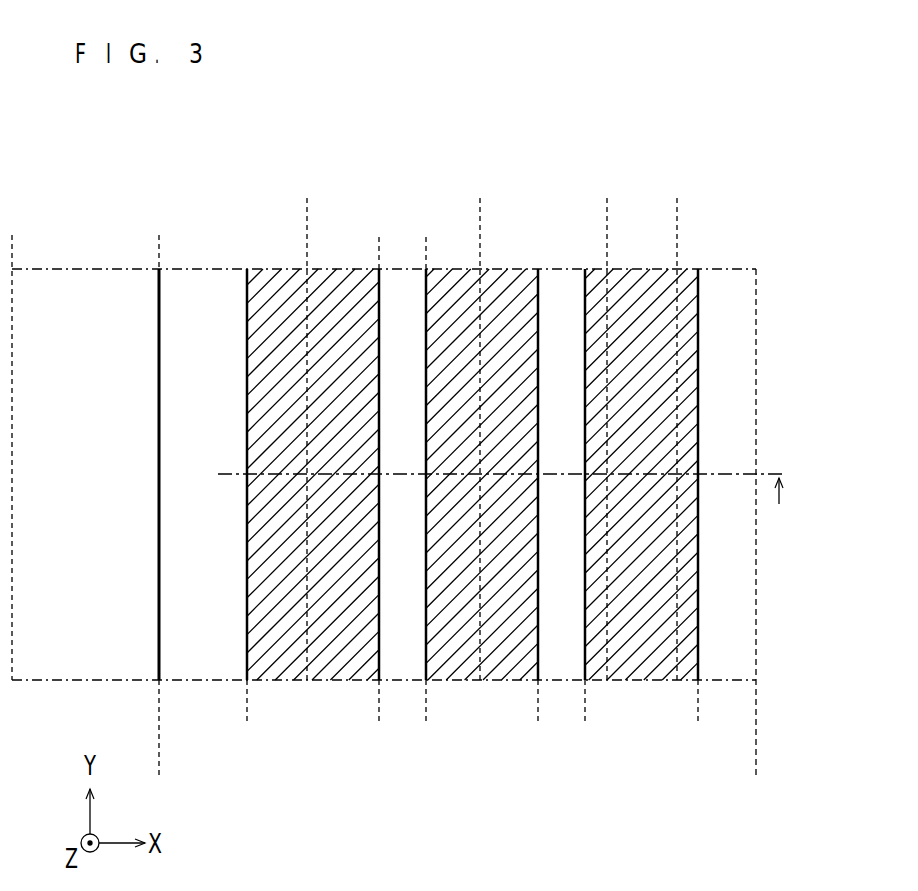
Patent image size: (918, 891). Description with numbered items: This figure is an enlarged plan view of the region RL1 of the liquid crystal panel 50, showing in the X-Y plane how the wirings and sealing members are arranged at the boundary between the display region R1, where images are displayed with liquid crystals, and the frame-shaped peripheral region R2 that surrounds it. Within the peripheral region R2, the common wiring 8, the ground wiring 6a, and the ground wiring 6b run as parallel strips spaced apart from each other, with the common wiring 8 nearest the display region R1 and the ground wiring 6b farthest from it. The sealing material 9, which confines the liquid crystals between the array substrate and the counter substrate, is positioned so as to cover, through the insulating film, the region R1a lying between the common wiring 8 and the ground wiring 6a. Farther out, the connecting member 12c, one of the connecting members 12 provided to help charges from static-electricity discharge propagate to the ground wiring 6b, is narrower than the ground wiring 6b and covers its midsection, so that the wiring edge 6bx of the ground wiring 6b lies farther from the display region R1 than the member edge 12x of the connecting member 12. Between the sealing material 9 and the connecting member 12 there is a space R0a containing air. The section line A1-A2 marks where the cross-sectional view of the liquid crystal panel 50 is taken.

The liquid crystal panel 50 is at (746, 203).
The display region R1 is at (160, 242).
The region between the common wiring and the ground wiring R1a is at (426, 244).
The space R0a is at (607, 205).
The peripheral region R2 is at (756, 770).
The region RL1 is at (756, 268).
The sealing material 9 is at (480, 205).
The common wiring 8 is at (379, 718).
The ground wiring 6a is at (538, 718).
The ground wiring 6b is at (698, 718).
The wiring edge 6bx is at (700, 440).
The connecting member 12c is at (657, 422).
The connecting member 12 is at (677, 205).
The member edge 12x is at (680, 400).
The line A1-A2 end A1 is at (223, 478).
The line A1-A2 end A2 is at (779, 505).